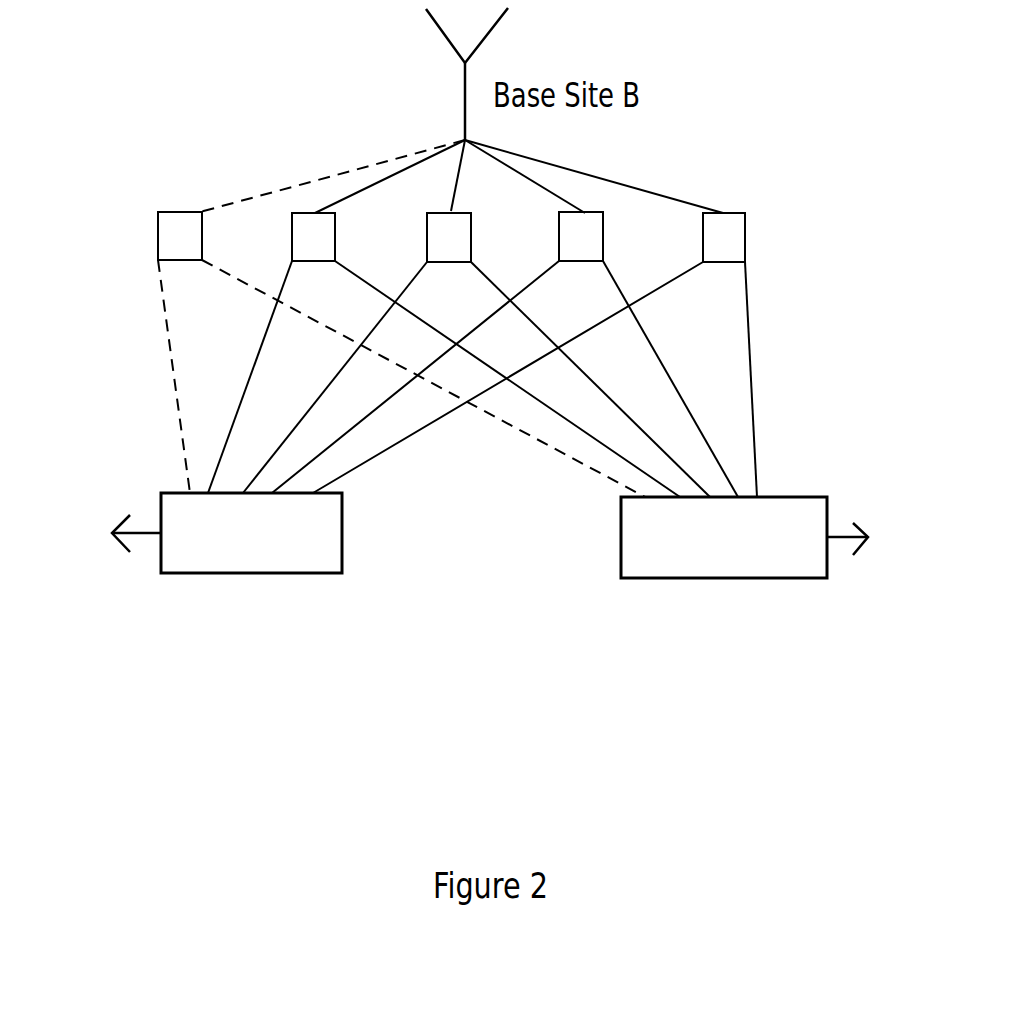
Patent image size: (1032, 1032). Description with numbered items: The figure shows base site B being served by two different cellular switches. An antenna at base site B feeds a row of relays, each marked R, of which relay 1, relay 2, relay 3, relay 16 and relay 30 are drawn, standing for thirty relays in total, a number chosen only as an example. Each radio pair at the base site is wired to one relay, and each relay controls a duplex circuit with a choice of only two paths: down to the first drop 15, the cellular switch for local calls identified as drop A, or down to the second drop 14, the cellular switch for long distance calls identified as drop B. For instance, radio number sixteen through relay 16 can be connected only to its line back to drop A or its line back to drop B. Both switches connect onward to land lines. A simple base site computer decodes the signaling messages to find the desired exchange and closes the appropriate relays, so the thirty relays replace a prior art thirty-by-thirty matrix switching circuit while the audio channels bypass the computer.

The relay 1 is at (377, 354).
The relay 2 is at (444, 355).
The relay 3 is at (476, 355).
The relay 16 is at (505, 354).
The relay 30 is at (535, 355).
The drop 15 is at (240, 584).
The drop 14 is at (742, 593).